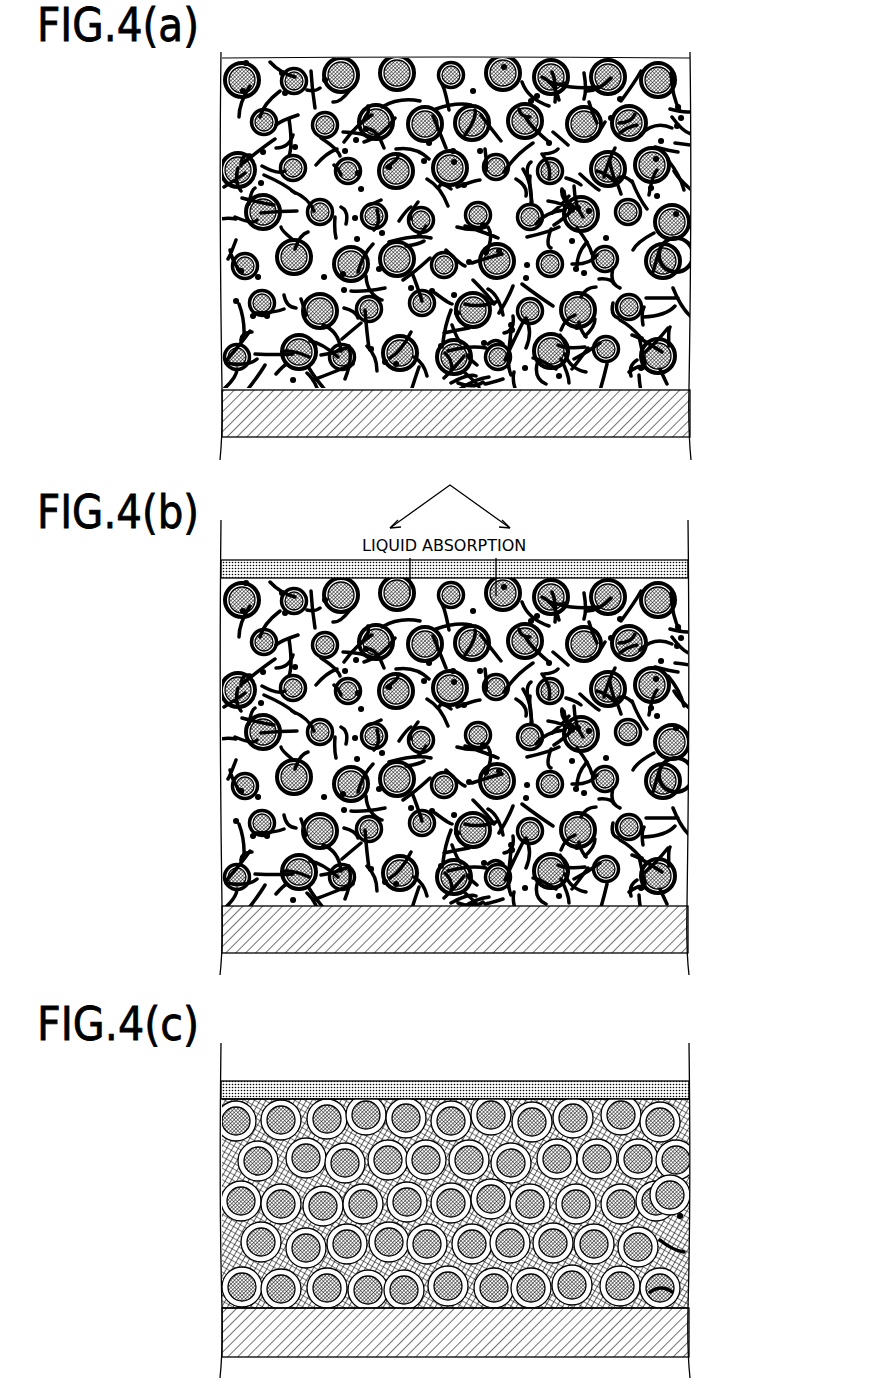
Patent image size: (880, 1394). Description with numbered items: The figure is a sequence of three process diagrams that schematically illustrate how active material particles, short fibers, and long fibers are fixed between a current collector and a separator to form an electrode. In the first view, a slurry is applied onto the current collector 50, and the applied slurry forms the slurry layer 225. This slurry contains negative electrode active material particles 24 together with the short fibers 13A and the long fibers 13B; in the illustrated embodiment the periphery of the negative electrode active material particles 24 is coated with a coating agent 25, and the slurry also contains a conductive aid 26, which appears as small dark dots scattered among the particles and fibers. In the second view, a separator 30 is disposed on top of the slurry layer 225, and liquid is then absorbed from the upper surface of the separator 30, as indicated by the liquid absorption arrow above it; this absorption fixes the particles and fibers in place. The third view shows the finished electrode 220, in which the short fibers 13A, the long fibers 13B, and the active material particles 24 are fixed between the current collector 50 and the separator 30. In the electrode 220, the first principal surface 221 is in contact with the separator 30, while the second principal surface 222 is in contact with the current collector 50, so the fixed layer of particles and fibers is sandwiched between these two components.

In FIG. 4a, the short fibers 13A is at (655, 129).
The short fibers 13A is at (655, 645).
In FIG. 4c, the short fibers 13A is at (688, 1246).
In FIG. 4a, the long fibers 13B is at (690, 172).
The long fibers 13B is at (689, 690).
In FIG. 4c, the long fibers 13B is at (665, 1289).
In FIG. 4a, the negative electrode active material particles 24 is at (689, 223).
The negative electrode active material particles 24 is at (688, 736).
In FIG. 4c, the negative electrode active material particles 24 is at (688, 1191).
In FIG. 4a, the coating agent 25 is at (688, 252).
The coating agent 25 is at (688, 766).
In FIG. 4c, the coating agent 25 is at (688, 1160).
In FIG. 4a, the conductive aid 26 is at (680, 213).
The conductive aid 26 is at (680, 726).
In FIG. 4c, the conductive aid 26 is at (688, 1216).
The separator 30 is at (684, 570).
In FIG. 4c, the separator 30 is at (684, 1090).
In FIG. 4a, the current collector 50 is at (675, 410).
The current collector 50 is at (675, 928).
In FIG. 4c, the current collector 50 is at (680, 1331).
In FIG. 4c, the electrode 220 is at (763, 1036).
In FIG. 4c, the first principal surface 221 is at (226, 1106).
In FIG. 4c, the second principal surface 222 is at (228, 1297).
In FIG. 4a, the slurry layer 225 is at (212, 62).
The slurry layer 225 is at (212, 582).